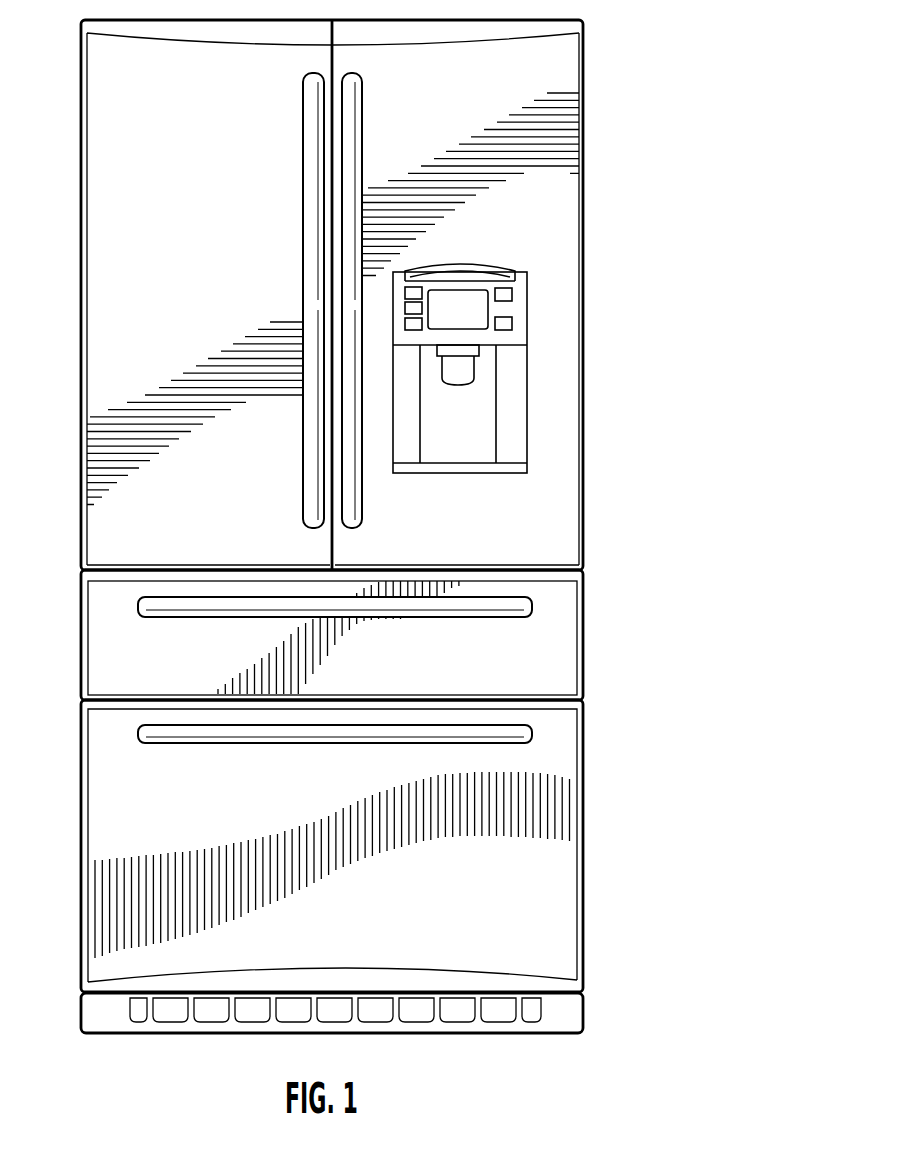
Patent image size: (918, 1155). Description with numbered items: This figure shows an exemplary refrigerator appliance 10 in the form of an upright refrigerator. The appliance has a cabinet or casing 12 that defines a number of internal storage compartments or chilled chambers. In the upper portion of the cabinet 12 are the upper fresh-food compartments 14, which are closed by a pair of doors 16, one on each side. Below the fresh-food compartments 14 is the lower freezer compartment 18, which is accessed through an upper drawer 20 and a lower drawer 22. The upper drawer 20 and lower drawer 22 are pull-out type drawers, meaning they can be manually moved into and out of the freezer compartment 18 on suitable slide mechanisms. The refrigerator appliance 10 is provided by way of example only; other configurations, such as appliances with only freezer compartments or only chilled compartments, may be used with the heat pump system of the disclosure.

The refrigerator appliance 10 is at (603, 173).
The cabinet 12 is at (583, 490).
The upper fresh-food compartments 14 is at (119, 210).
The doors 16 is at (238, 488).
The lower freezer compartment 18 is at (540, 660).
The upper drawer 20 is at (185, 666).
The lower drawer 22 is at (433, 923).